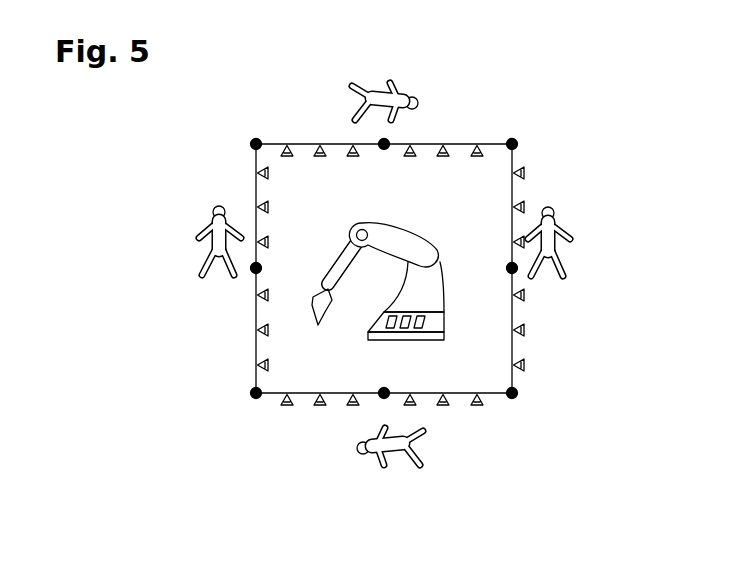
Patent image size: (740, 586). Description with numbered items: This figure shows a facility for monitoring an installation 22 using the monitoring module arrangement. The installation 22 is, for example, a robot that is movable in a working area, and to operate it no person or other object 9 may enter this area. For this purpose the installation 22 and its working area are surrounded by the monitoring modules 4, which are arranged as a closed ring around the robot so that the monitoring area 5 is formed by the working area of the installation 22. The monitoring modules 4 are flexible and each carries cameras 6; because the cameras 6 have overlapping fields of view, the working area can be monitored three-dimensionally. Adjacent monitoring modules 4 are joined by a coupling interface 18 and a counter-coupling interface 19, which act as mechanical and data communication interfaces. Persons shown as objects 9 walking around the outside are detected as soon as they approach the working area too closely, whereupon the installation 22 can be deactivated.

The monitoring module 4 is at (462, 144).
The monitoring area 5 is at (325, 206).
The camera 6 is at (525, 172).
The object 9 is at (350, 97).
The coupling interface 18 is at (518, 395).
The counter-coupling interface 19 is at (384, 269).
The installation 22 is at (388, 233).